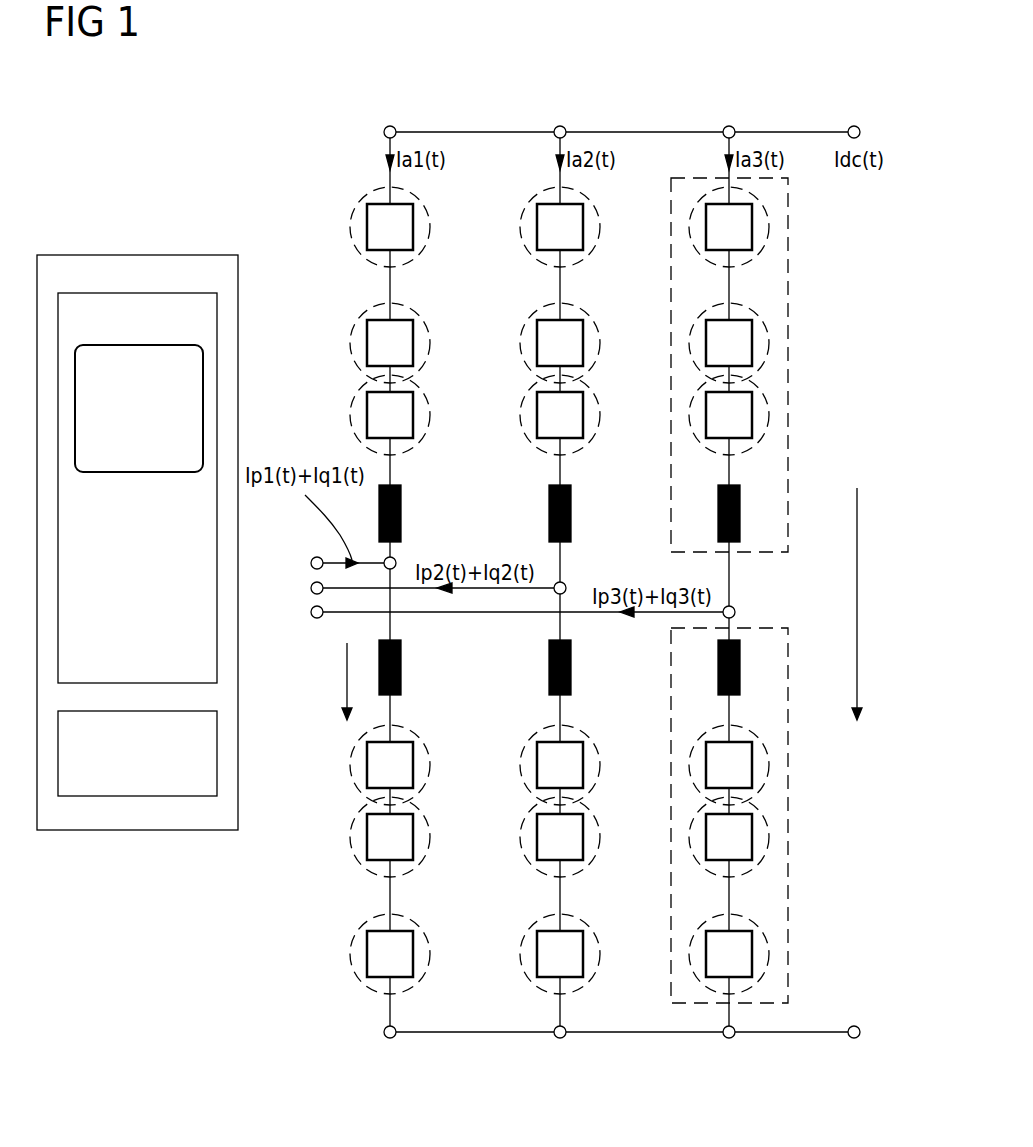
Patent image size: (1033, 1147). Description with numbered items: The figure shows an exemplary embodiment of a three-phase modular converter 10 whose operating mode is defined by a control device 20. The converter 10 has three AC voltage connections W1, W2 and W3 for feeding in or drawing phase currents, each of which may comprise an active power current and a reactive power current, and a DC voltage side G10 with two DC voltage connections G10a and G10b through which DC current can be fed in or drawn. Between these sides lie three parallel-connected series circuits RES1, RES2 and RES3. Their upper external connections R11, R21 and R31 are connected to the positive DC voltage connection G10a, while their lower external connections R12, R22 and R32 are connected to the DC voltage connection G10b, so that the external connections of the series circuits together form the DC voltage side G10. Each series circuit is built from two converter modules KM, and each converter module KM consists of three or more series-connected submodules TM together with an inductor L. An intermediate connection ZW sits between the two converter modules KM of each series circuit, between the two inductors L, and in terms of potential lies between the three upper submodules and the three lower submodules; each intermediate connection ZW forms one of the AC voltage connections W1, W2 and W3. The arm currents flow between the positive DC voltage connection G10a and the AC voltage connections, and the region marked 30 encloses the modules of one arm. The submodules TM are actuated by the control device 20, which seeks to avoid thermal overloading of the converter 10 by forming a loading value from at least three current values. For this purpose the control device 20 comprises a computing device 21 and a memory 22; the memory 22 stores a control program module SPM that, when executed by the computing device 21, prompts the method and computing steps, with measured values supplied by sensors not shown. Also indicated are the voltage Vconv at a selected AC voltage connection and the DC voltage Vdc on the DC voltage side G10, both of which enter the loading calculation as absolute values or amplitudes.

The converter 10 is at (176, 909).
The control device 20 is at (62, 255).
The computing device 21 is at (155, 771).
The memory 22 is at (124, 293).
The converter arm 30 is at (817, 369).
The submodule TM is at (524, 590).
The converter module KM is at (789, 277).
The inductor L is at (602, 575).
The intermediate connection ZW is at (605, 563).
The AC voltage connection W1 is at (313, 560).
The AC voltage connection W2 is at (311, 588).
The AC voltage connection W3 is at (313, 616).
The DC voltage side G10 is at (808, 132).
The DC voltage connection G10a is at (860, 131).
The DC voltage connection G10b is at (860, 1031).
The external connection R11 is at (389, 125).
The external connection R21 is at (559, 125).
The external connection R31 is at (728, 125).
The external connection R12 is at (391, 1039).
The external connection R22 is at (561, 1039).
The external connection R32 is at (730, 1039).
The series circuit RES1 is at (390, 283).
The series circuit RES2 is at (560, 283).
The series circuit RES3 is at (729, 283).
The control program module SPM is at (125, 473).
The DC voltage Vdc is at (858, 592).
The voltage at the AC voltage connection Vconv is at (345, 657).